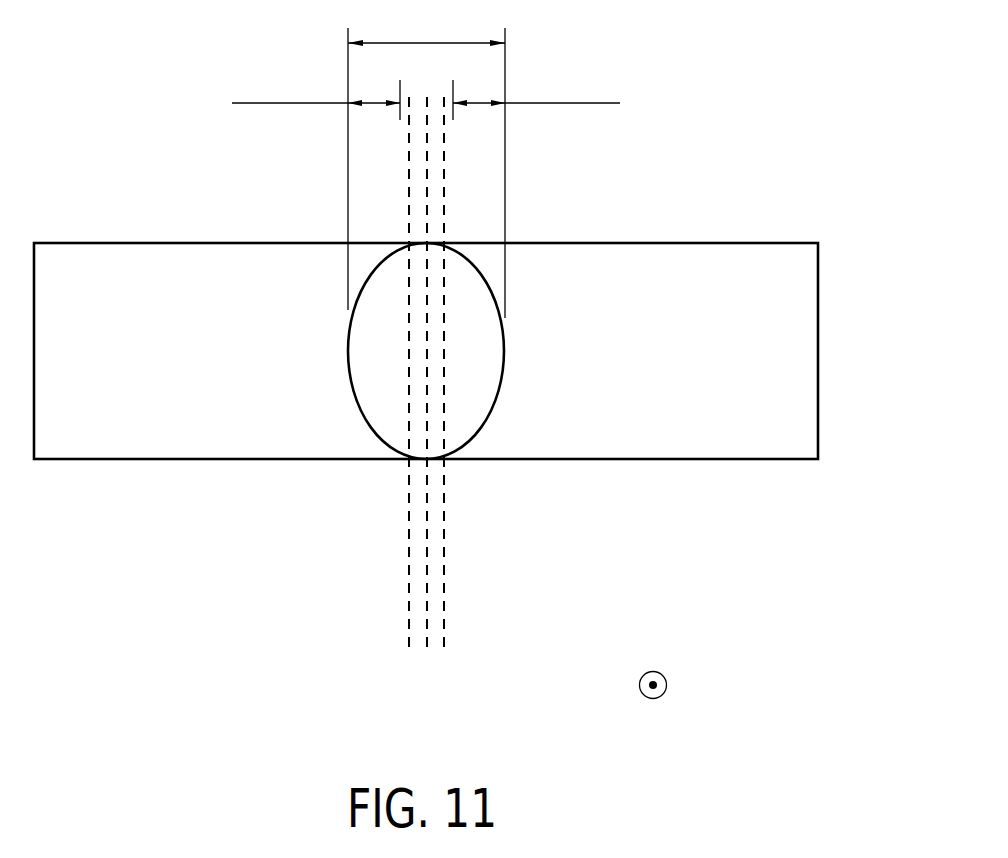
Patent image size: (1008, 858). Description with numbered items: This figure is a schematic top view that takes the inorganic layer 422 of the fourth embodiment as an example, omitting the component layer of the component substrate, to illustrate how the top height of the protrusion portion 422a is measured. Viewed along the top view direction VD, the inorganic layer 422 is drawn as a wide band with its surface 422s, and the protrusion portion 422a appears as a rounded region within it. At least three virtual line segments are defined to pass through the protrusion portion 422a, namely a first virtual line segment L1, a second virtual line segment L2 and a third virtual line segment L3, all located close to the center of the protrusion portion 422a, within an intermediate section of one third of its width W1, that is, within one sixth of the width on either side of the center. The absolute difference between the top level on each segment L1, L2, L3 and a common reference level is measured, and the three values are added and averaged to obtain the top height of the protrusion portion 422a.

The inorganic layer 422 is at (466, 351).
The surface of substrate 422s is at (797, 371).
The protrusion portion 422a is at (485, 385).
The first virtual line segment L1 is at (408, 555).
The second virtual line segment L2 is at (427, 647).
The third virtual line segment L3 is at (445, 555).
The width of opening W1 is at (426, 162).
The top view direction VD is at (676, 684).